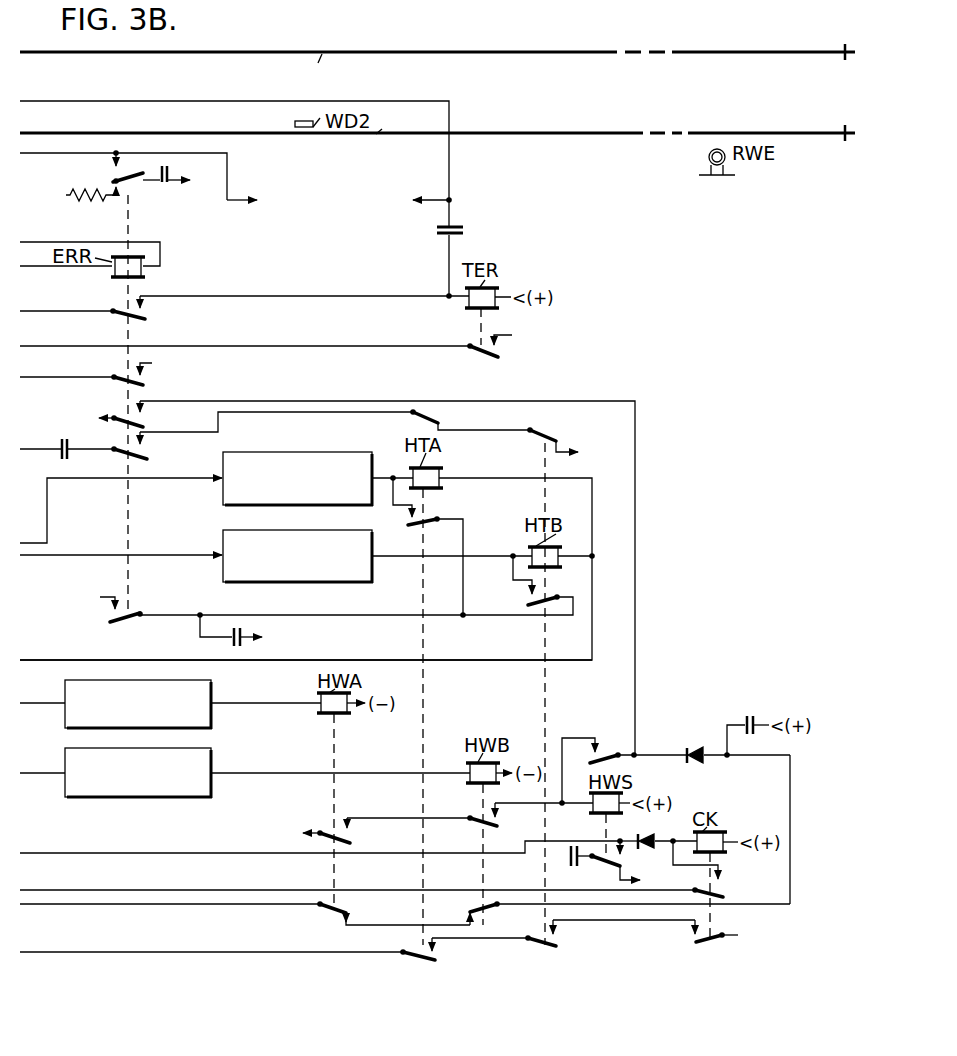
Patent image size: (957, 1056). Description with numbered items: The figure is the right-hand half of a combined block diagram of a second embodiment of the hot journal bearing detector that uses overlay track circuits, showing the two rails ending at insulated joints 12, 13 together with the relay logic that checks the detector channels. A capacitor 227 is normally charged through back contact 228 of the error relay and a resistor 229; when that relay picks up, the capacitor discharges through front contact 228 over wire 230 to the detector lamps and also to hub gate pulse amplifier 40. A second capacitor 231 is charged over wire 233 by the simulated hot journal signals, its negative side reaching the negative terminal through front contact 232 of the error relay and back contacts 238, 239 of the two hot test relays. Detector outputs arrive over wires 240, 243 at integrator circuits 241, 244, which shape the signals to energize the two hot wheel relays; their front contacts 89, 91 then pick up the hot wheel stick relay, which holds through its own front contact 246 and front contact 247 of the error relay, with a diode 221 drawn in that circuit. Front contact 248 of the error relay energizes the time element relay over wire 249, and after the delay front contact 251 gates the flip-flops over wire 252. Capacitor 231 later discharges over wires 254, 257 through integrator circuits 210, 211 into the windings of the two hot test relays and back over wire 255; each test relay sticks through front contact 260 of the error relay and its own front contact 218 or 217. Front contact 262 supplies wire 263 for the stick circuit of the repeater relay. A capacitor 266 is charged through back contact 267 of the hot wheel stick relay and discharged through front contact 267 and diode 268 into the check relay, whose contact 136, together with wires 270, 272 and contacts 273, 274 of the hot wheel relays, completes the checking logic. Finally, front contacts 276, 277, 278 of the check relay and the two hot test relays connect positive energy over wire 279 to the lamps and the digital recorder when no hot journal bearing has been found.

The insulated joint 12 is at (845, 53).
The insulated joint 13 is at (845, 135).
The hub gate pulse amplifier 40 is at (338, 212).
The front contact of relay HWB 89 is at (320, 836).
The front contact of relay HWA 91 is at (351, 837).
The contact of relay CK 136 is at (726, 895).
The integrator circuit 210 is at (304, 452).
The integrator circuit 211 is at (340, 583).
The front contact of relay HTB 217 is at (518, 601).
The front contact of relay HTA 218 is at (411, 527).
The diode 221 is at (691, 750).
The capacitor 227 is at (168, 183).
The contact of relay ERR 228 is at (115, 181).
The resistor 229 is at (72, 207).
The wire 230 is at (40, 153).
The capacitor 231 is at (69, 455).
The front contact of relay ERR 232 is at (150, 461).
The wire 233 is at (46, 448).
The back contact of relay HTA 238 is at (412, 416).
The back contact of relay HTB 239 is at (545, 434).
The wire 240 is at (44, 703).
The integrator circuit 241 is at (213, 695).
The wire 243 is at (44, 775).
The integrator circuit 244 is at (213, 758).
The front contact of relay HWS 246 is at (624, 767).
The front contact of relay ERR 247 is at (128, 417).
The front contact of relay ERR 248 is at (149, 310).
The wire 249 is at (78, 310).
The front contact of relay TER 251 is at (498, 356).
The wire 252 is at (255, 344).
The wire 254 is at (47, 518).
The wire 255 is at (45, 659).
The wire 257 is at (42, 556).
The front contact of relay ERR 260 is at (131, 612).
The front contact of relay ERR 262 is at (122, 376).
The wire 263 is at (32, 378).
The capacitor 266 is at (560, 843).
The contact of relay HWS 267 is at (622, 864).
The diode 268 is at (650, 849).
The wire 270 is at (132, 887).
The wire 272 is at (68, 905).
The contact of relay HWA 273 is at (349, 914).
The contact of relay HWB 274 is at (470, 914).
The front contact of relay CK 276 is at (738, 943).
The front contact of relay HTB 277 is at (563, 942).
The front contact of relay HTA 278 is at (428, 962).
The wire 279 is at (100, 952).